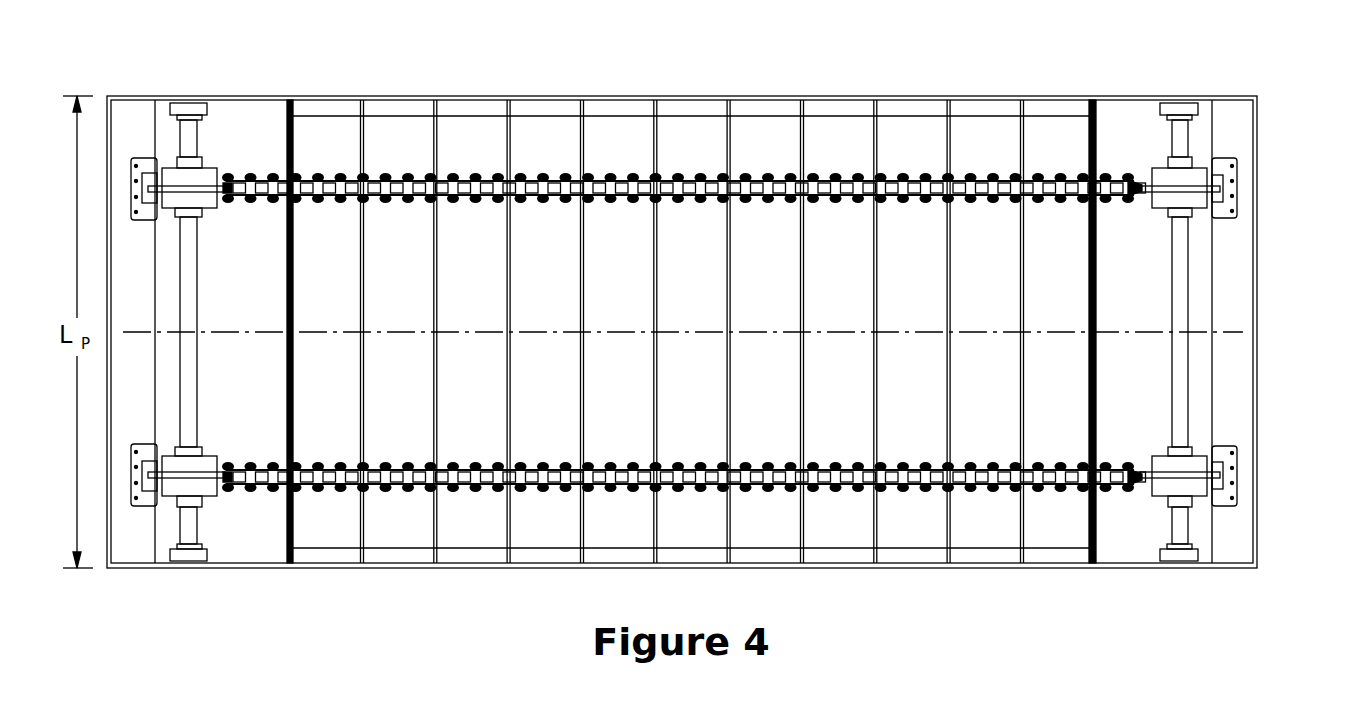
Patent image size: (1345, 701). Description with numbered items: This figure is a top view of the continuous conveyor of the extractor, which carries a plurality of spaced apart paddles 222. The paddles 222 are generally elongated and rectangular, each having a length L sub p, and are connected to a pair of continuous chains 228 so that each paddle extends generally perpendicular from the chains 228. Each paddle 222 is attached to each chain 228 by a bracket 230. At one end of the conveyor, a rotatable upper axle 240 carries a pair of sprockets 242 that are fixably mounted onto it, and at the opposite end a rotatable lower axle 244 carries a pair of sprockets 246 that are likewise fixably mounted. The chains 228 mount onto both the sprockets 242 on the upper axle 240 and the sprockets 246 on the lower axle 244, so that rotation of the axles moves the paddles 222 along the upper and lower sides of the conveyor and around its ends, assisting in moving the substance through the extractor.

The paddles 222 is at (368, 142).
The continuous chains 228 is at (685, 170).
The bracket 230 is at (141, 158).
The upper axle 240 is at (1180, 355).
The sprockets 242 is at (1197, 187).
The lower axle 244 is at (197, 138).
The sprockets 246 is at (207, 177).